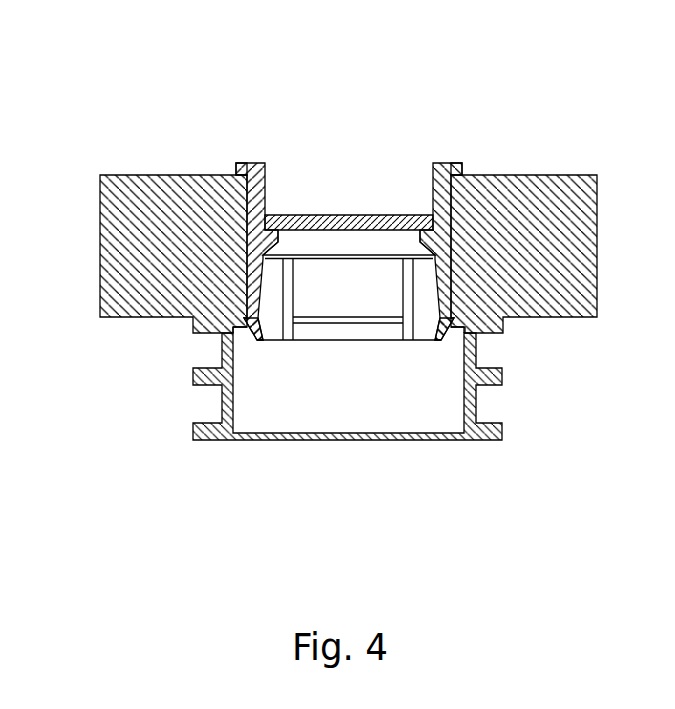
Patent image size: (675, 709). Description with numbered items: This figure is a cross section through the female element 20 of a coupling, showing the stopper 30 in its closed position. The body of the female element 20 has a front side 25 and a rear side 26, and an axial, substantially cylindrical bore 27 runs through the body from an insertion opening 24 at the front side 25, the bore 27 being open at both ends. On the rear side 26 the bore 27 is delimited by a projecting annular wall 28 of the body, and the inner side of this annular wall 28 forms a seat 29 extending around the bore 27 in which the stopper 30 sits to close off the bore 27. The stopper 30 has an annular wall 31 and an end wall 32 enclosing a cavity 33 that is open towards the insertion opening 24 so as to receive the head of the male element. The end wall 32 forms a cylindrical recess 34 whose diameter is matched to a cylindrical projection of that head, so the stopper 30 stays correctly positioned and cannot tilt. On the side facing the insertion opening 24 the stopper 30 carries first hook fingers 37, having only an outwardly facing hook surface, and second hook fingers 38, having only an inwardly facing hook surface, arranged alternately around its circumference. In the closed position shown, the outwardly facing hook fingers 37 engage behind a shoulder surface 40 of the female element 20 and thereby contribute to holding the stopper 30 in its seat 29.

The female element 20 is at (522, 298).
The insertion opening 24 is at (388, 415).
The front side 25 is at (355, 493).
The rear side 26 is at (208, 158).
The bore 27 is at (306, 385).
The annular wall 28 is at (463, 162).
The seat 29 is at (244, 168).
The stopper 30 is at (370, 203).
The annular wall 31 is at (266, 175).
The end wall 32 is at (331, 222).
The cavity 33 is at (364, 304).
The cylindrical recess 34 is at (287, 240).
The first hook fingers 37 is at (250, 318).
The second hook fingers 38 is at (375, 296).
The shoulder surface 40 is at (240, 318).